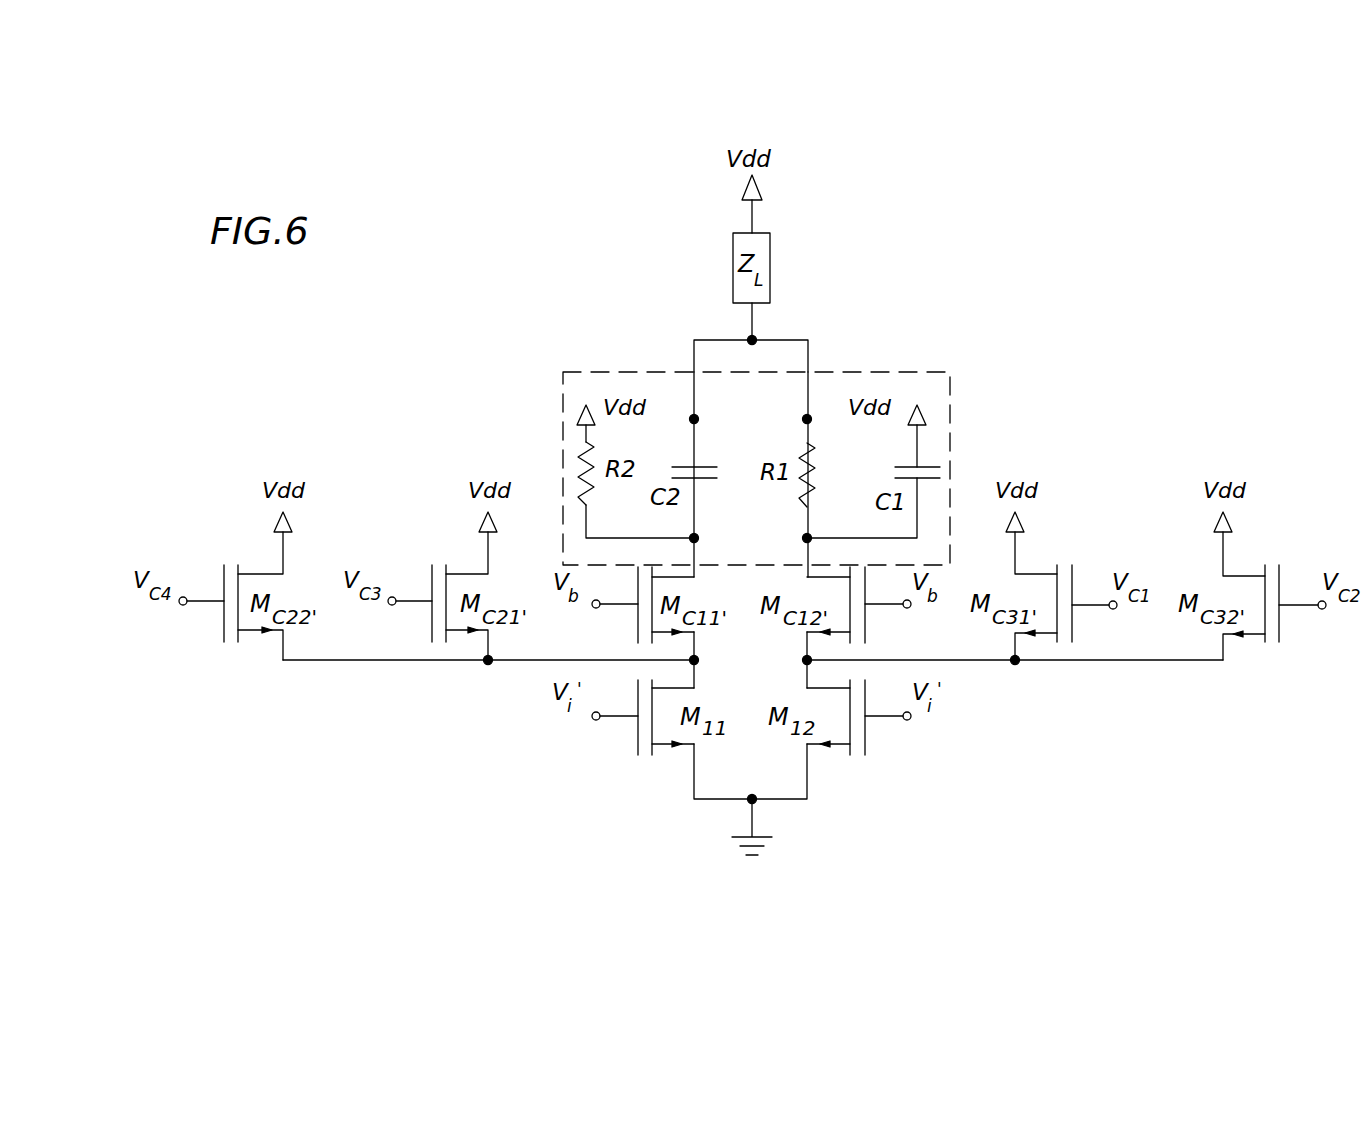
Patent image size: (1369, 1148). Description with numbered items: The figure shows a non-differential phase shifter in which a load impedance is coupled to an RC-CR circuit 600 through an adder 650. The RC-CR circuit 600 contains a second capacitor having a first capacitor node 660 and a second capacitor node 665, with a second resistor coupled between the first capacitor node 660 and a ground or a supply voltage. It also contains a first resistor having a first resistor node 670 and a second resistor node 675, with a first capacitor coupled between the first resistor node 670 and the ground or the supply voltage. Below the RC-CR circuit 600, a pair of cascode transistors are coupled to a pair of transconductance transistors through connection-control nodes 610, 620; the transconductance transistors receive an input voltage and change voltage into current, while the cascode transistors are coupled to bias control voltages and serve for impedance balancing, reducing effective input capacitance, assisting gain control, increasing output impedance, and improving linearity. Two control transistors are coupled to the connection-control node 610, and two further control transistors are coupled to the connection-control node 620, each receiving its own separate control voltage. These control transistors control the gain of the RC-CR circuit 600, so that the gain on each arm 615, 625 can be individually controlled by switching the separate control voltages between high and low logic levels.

The RC-CR circuit 600 is at (900, 372).
The connection-control node 610 is at (696, 659).
The arm 615 is at (694, 350).
The connection-control node 620 is at (806, 662).
The arm 625 is at (808, 355).
The adder 650 is at (750, 338).
The first capacitor node 660 is at (696, 537).
The second capacitor node 665 is at (696, 418).
The first resistor node 670 is at (806, 540).
The second resistor node 675 is at (806, 421).